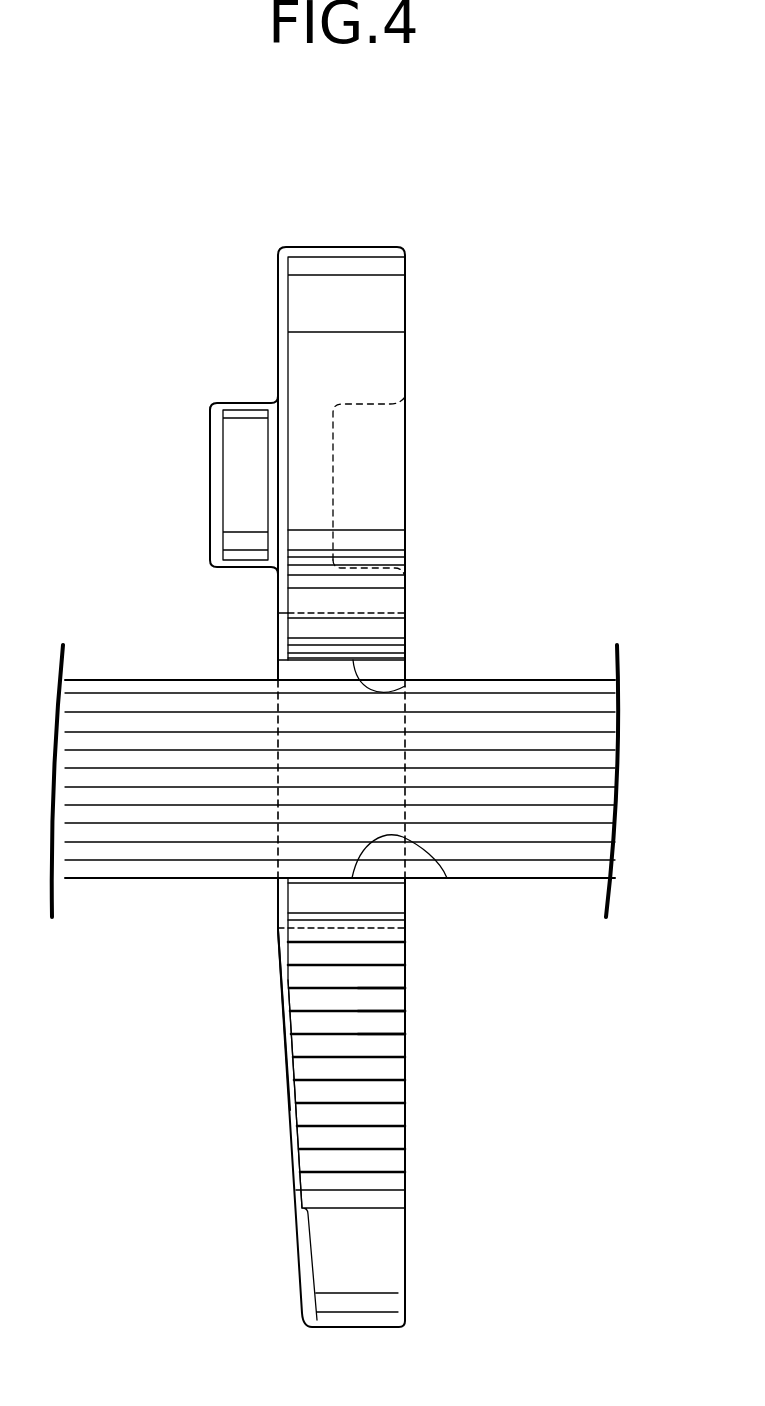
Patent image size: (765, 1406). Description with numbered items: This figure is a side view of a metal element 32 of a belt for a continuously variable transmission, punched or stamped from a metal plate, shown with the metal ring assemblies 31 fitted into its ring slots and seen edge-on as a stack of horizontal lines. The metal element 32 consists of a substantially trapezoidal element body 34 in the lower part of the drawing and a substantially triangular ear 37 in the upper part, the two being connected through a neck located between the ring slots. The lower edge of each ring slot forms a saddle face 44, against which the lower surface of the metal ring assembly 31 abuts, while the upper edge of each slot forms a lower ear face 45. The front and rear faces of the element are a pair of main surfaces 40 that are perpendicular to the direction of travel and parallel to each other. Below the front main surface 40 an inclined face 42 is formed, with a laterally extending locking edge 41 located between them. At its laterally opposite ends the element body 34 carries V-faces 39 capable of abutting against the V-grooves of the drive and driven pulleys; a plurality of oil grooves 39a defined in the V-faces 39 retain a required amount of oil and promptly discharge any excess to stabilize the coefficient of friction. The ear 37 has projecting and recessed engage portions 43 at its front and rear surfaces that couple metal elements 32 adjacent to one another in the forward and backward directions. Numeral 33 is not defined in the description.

The metal ring assembly 31 is at (153, 887).
The metal element 32 is at (405, 378).
The spline teeth of shaft 33 is at (133, 742).
The element body 34 is at (385, 1073).
The ear 37 is at (317, 367).
The V-face 39 is at (315, 1022).
The oil groove 39a is at (358, 985).
The main surface 40 is at (278, 637).
The locking edge 41 is at (278, 947).
The inclined face 42 is at (287, 1065).
The engage portion 43 is at (238, 475).
The saddle face 44 is at (447, 878).
The lower ear face 45 is at (405, 686).